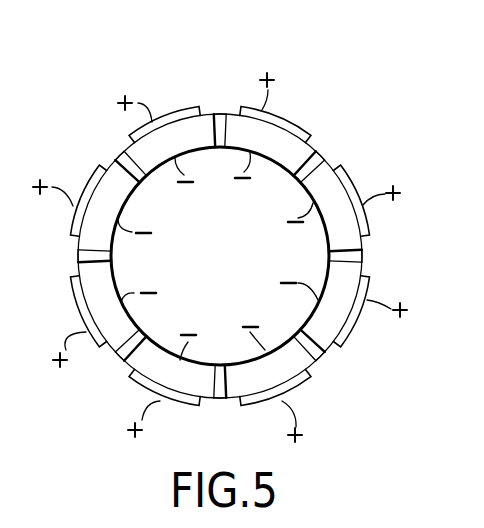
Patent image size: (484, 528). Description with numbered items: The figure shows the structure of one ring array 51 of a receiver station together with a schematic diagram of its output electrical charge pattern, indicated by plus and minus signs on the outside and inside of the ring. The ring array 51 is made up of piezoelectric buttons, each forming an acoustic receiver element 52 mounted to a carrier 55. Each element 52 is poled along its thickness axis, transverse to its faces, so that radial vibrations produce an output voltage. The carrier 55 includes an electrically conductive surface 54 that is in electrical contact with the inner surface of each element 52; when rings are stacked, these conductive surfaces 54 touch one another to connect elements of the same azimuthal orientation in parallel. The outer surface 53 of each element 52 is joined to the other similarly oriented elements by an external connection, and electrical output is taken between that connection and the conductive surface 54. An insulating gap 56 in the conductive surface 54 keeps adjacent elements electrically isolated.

The ring array 51 is at (241, 231).
The acoustic receiver element 52 is at (278, 122).
The outer surface 53 is at (303, 133).
The electrically conductive surface 54 is at (310, 143).
The carrier 55 is at (310, 150).
The insulating gap 56 is at (312, 157).